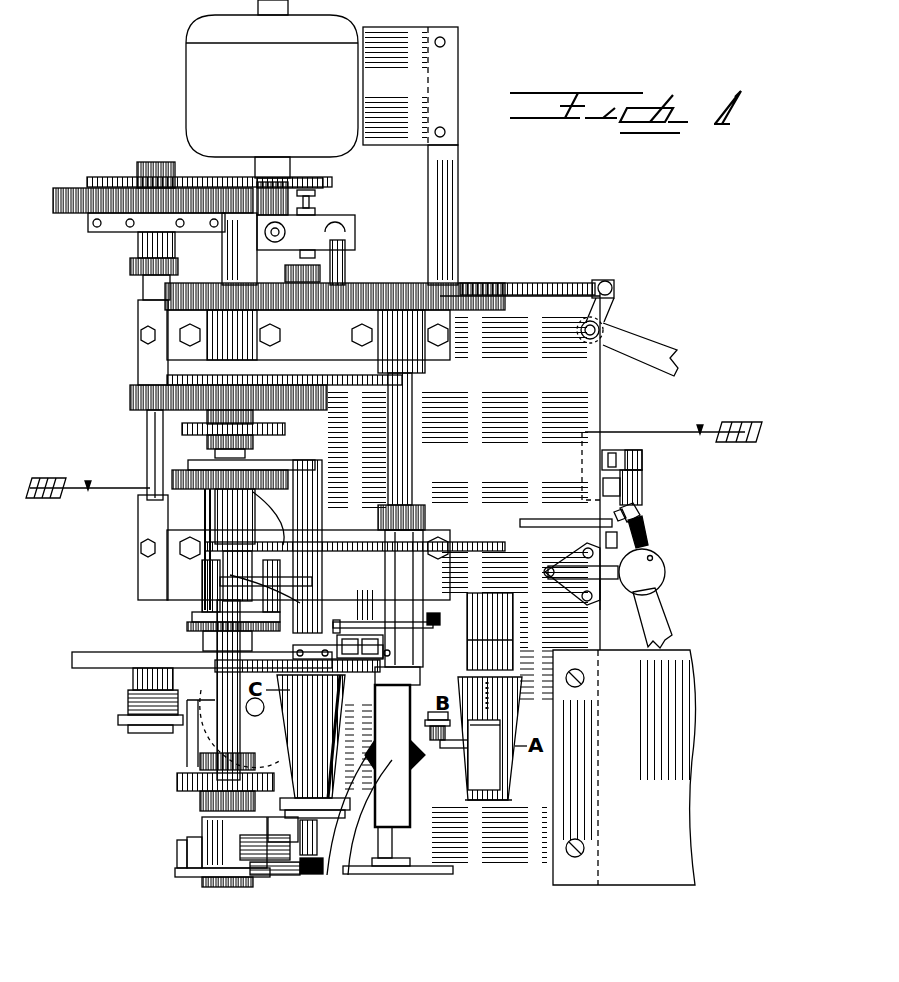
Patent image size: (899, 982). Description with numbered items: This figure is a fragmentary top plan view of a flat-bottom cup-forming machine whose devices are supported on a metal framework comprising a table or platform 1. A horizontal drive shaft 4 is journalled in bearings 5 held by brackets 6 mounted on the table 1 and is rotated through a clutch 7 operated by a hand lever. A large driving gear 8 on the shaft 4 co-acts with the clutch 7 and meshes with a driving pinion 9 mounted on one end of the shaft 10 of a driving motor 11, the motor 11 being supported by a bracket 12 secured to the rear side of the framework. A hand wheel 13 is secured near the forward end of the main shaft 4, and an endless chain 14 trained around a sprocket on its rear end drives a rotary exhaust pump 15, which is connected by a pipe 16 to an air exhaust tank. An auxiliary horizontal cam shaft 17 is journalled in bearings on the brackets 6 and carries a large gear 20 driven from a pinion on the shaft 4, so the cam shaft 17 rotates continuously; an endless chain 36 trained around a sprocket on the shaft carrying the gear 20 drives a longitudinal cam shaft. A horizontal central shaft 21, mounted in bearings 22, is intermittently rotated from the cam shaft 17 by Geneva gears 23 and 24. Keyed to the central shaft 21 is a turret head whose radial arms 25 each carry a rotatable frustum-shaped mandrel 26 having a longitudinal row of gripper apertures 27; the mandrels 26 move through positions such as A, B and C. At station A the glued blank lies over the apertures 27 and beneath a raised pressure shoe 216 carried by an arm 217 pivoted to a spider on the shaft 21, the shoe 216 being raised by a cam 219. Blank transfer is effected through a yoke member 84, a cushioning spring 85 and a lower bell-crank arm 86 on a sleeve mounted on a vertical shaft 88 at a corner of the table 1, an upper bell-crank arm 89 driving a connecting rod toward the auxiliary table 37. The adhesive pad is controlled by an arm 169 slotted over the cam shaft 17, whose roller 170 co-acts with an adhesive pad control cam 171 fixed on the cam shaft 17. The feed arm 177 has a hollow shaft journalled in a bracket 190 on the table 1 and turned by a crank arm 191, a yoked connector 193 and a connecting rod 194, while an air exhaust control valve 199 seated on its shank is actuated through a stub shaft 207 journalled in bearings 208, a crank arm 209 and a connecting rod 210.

The table or platform 1 is at (588, 410).
The horizontal drive shaft 4 is at (150, 440).
The bearings 5 is at (146, 320).
The brackets 6 is at (308, 455).
The clutch 7 is at (148, 250).
The large driving gear 8 is at (76, 190).
The driving pinion 9 is at (298, 186).
The shaft 10 is at (272, 178).
The driving motor 11 is at (205, 75).
The bracket 12 is at (415, 57).
The hand wheel 13 is at (94, 655).
The endless chain 14 is at (190, 176).
The rotary exhaust pump 15 is at (318, 228).
The pipe 16 is at (346, 264).
The auxiliary horizontal cam shaft 17 is at (236, 733).
The large gear 20 is at (136, 398).
The horizontal central shaft 21 is at (410, 472).
The bearings 22 is at (424, 372).
The Geneva gear 23 is at (570, 318).
The Geneva gear 24 is at (198, 268).
The arms or spokes 25 is at (452, 640).
The cup former or mandrel 26 is at (313, 746).
The gripper apertures or openings 27 is at (458, 690).
The endless chain 36 is at (342, 380).
The auxiliary table 37 is at (685, 840).
The second yoke member 84 is at (600, 283).
The cushioning spring 85 is at (590, 286).
The lower bell-crank arm 86 is at (612, 308).
The vertical shaft 88 is at (593, 340).
The upper bell-crank arm 89 is at (654, 348).
The bar or arm 169 is at (212, 770).
The roller 170 is at (205, 806).
The adhesive pad control cam 171 is at (205, 783).
The feed arm 177 is at (665, 628).
The bracket 190 is at (610, 580).
The crank arm 191 is at (642, 548).
The yoked connector 193 is at (643, 512).
The connecting rod 194 is at (571, 566).
The air exhaust control valve 199 is at (652, 578).
The stub shaft 207 is at (640, 506).
The bearings 208 is at (623, 460).
The crank arm 209 is at (566, 511).
The connecting rod 210 is at (603, 487).
The pressure shoe 216 is at (487, 787).
The arm 217 is at (457, 742).
The cam 219 is at (352, 755).